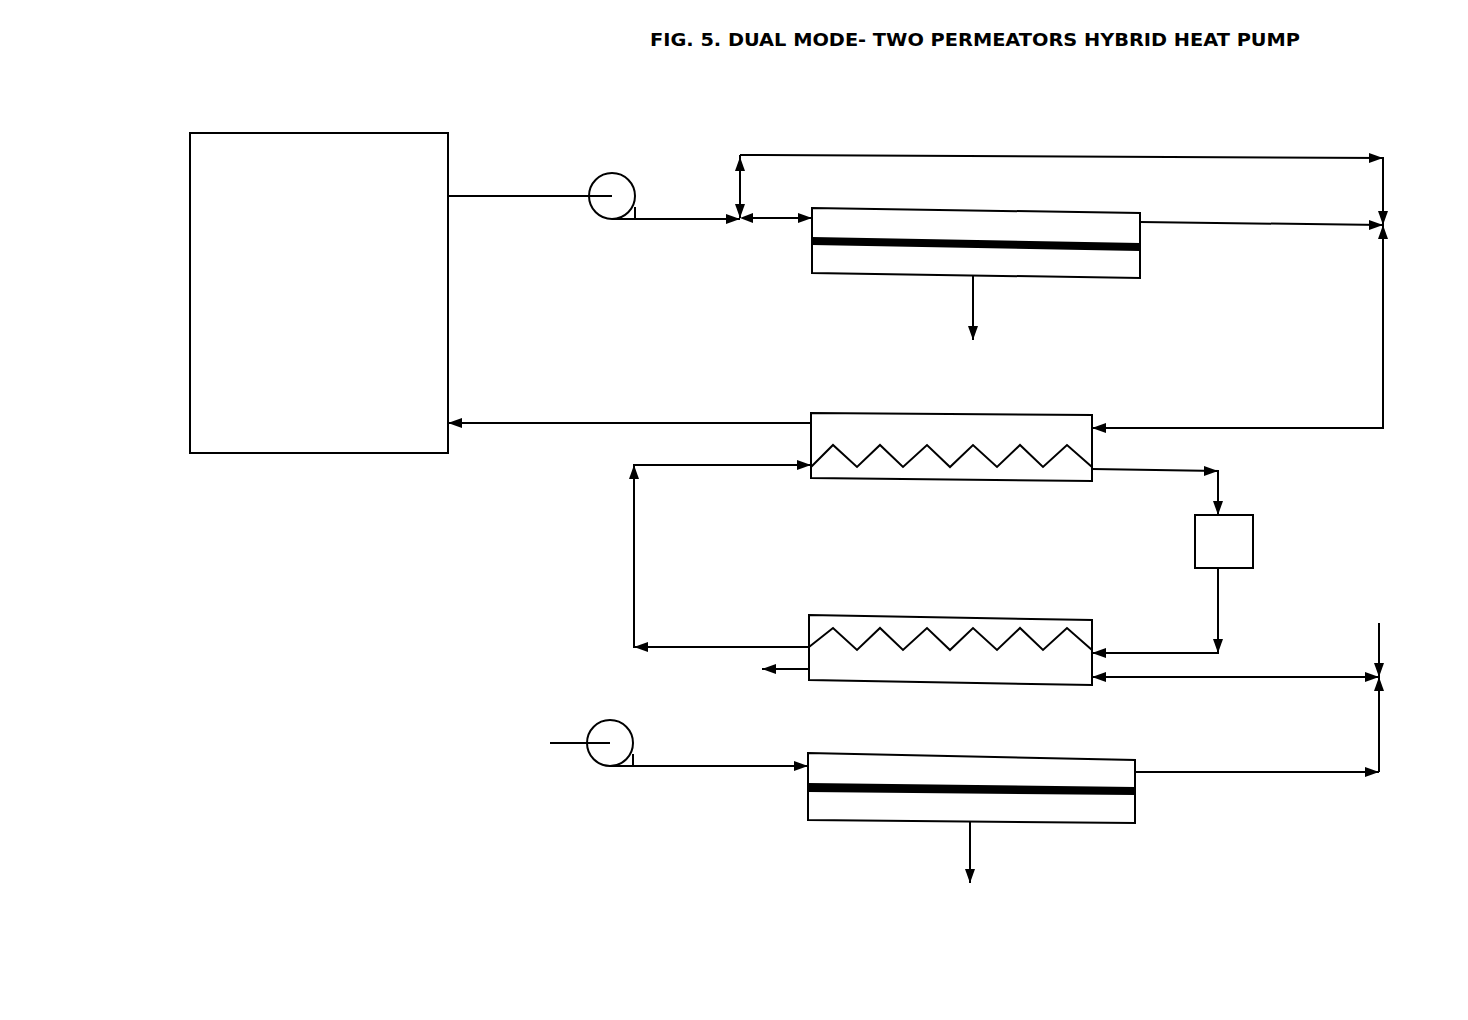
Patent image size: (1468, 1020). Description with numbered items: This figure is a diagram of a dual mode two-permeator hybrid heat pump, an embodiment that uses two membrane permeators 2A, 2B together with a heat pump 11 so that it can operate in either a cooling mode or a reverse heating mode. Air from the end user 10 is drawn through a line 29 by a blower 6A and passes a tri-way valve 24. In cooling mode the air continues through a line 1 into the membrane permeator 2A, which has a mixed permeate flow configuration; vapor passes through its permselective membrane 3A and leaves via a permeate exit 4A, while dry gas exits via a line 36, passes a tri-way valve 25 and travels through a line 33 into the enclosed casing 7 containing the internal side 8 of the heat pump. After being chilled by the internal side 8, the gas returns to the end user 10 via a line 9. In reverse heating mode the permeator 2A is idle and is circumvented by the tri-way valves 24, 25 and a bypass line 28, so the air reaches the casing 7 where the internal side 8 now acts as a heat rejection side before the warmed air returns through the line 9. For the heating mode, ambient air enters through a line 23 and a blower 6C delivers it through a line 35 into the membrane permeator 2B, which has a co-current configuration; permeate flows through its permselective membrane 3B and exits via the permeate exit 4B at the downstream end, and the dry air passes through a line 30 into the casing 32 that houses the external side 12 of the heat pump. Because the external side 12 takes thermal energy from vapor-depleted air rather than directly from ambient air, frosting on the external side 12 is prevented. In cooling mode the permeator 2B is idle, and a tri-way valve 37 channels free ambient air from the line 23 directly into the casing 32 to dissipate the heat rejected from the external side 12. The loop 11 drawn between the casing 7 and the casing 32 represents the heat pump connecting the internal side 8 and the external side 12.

The end user 10 is at (1283, 570).
The line 29 is at (570, 192).
The blower 6A is at (618, 178).
The tri-way valve 24 is at (733, 213).
The line 1 is at (775, 222).
The bypass line 28 is at (1270, 158).
The tri-way valve 25 is at (1393, 228).
The line 36 is at (1258, 228).
The membrane permeator 2A is at (1040, 276).
The permselective membrane 3A is at (1103, 250).
The permeate exit 4A is at (957, 308).
The line 9 is at (690, 420).
The enclosed casing 7 is at (855, 410).
The internal side 8 is at (960, 445).
The line 33 is at (1272, 425).
The heat pump 11 is at (720, 556).
The casing 32 is at (890, 613).
The external side 12 is at (1005, 640).
The line 23 is at (1379, 623).
The tri-way valve 37 is at (1393, 680).
The blower 6C is at (606, 718).
The line 35 is at (750, 763).
The membrane permeator 2B is at (1065, 823).
The permselective membrane 3B is at (1113, 796).
The permeate exit 4B is at (949, 852).
The line 30 is at (1250, 775).